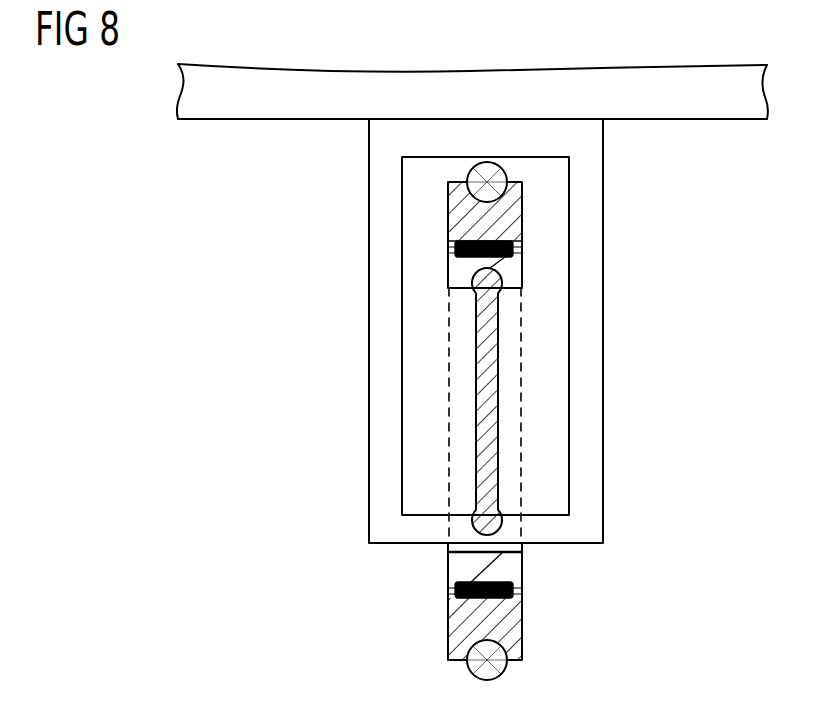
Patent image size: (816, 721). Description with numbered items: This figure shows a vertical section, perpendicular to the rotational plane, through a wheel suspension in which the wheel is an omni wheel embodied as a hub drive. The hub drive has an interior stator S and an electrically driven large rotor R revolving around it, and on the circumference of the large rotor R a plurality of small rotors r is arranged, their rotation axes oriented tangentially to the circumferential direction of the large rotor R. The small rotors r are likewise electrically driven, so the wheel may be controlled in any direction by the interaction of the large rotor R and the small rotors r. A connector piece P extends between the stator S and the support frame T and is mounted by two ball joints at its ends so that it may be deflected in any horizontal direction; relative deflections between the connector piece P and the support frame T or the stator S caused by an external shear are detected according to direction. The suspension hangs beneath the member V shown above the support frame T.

The vehicle body / carrier beam V is at (689, 120).
The support frame T is at (369, 240).
The large rotor R is at (448, 197).
The small rotors r is at (507, 175).
The stator S is at (522, 271).
The connector piece P is at (476, 395).